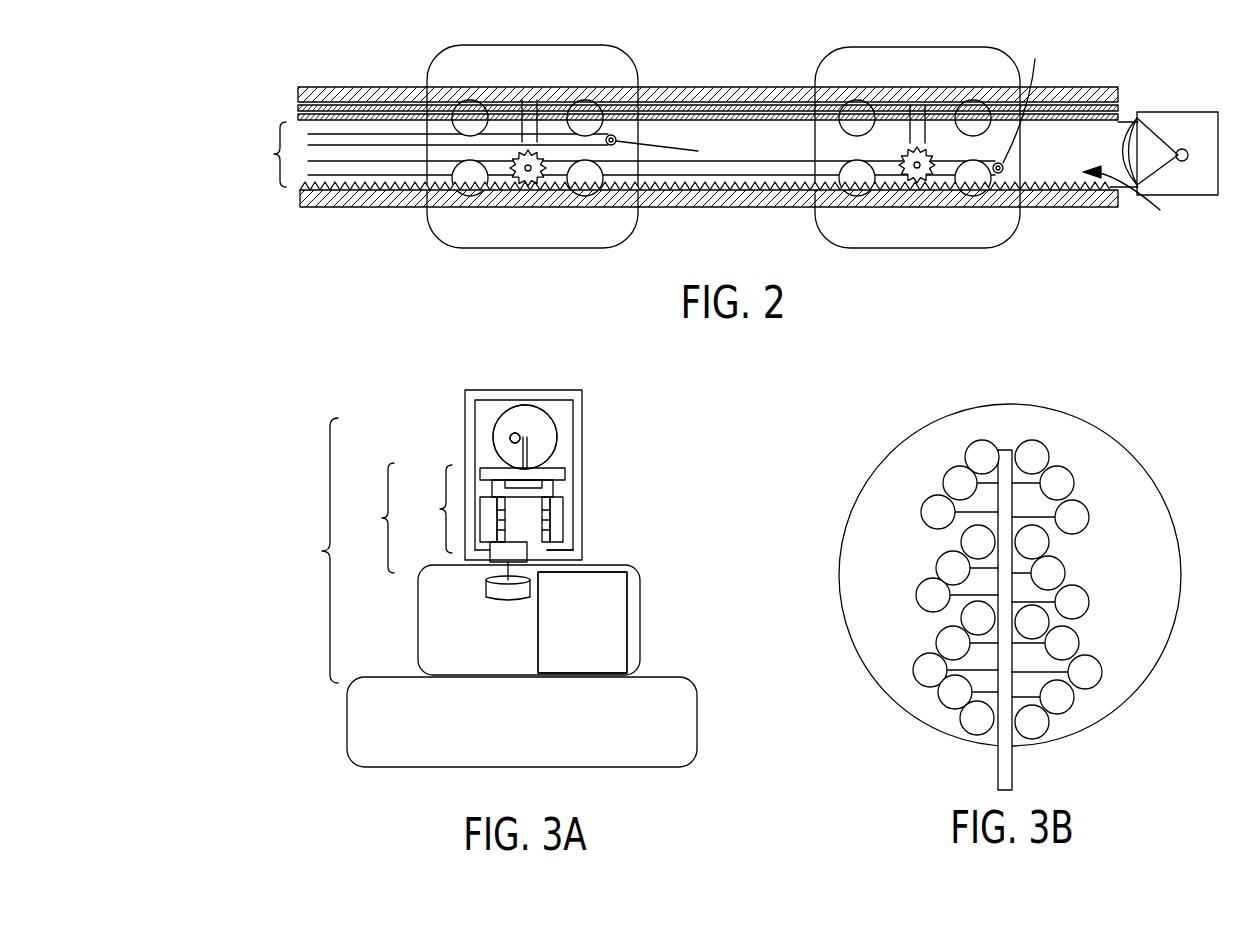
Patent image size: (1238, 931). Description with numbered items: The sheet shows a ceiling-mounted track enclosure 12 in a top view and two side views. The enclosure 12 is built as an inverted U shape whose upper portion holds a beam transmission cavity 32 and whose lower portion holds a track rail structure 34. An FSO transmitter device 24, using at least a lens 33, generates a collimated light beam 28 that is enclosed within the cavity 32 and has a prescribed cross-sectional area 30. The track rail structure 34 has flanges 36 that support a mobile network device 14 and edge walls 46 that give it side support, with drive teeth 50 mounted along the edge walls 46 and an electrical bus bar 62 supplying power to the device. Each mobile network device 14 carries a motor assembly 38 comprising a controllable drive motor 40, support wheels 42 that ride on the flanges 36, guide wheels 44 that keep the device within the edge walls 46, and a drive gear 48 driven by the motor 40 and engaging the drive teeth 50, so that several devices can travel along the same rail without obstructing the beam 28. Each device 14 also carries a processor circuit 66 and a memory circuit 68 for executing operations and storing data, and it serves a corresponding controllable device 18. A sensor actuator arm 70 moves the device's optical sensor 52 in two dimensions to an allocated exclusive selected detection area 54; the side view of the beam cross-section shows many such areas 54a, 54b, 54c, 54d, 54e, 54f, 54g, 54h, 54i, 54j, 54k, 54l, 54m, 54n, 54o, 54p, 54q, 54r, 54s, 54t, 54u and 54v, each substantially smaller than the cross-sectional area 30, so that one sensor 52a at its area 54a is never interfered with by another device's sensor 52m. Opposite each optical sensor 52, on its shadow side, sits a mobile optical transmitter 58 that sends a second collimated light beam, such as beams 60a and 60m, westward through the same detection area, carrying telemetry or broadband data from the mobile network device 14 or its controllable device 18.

In FIG. 2, the ceiling-mounted track enclosure 12 is at (372, 93).
In FIG. 3A, the ceiling-mounted track enclosure 12 is at (582, 425).
In FIG. 2, the mobile network device 14 is at (465, 55).
In FIG. 3A, the mobile network device 14 is at (314, 550).
In FIG. 3A, the controllable device 18 is at (437, 769).
In FIG. 2, the FSO transmitter device 24 is at (1196, 112).
In FIG. 2, the collimated light beam 28 is at (1133, 199).
In FIG. 3A, the collimated light beam 28 is at (512, 410).
In FIG. 3B, the collimated light beam 28 is at (1082, 417).
In FIG. 3A, the prescribed cross-sectional area 30 is at (545, 425).
In FIG. 3B, the prescribed cross-sectional area 30 is at (1020, 413).
In FIG. 2, the beam transmission cavity 32 is at (265, 154).
In FIG. 3A, the beam transmission cavity 32 is at (580, 398).
In FIG. 2, the lens 33 is at (1113, 148).
In FIG. 3A, the track rail structure 34 is at (433, 509).
In FIG. 3A, the flanges 36 is at (478, 548).
In FIG. 3A, the motor assembly 38 is at (373, 518).
In FIG. 3A, the controllable drive motor 40 is at (495, 595).
In FIG. 3A, the support wheels 42 is at (563, 505).
In FIG. 2, the guide wheels 44 is at (472, 115).
In FIG. 3A, the guide wheels 44 is at (480, 473).
In FIG. 3A, the edge walls 46 is at (472, 440).
In FIG. 2, the drive gear 48 is at (527, 187).
In FIG. 3A, the drive gear 48 is at (510, 560).
In FIG. 2, the drive teeth 50 is at (305, 193).
In FIG. 3A, the optical sensor 52 is at (510, 437).
In FIG. 3A, the exclusive selected detection area 54 is at (515, 438).
In FIG. 2, the optical sensor 52a is at (616, 139).
In FIG. 2, the optical sensor 52m is at (1004, 167).
In FIG. 3B, the exclusive selected detection area 54a is at (978, 458).
In FIG. 3B, the exclusive selected detection area 54b is at (963, 483).
In FIG. 3B, the exclusive selected detection area 54c is at (940, 511).
In FIG. 3B, the exclusive selected detection area 54d is at (975, 543).
In FIG. 3B, the exclusive selected detection area 54e is at (950, 570).
In FIG. 3B, the exclusive selected detection area 54f is at (930, 598).
In FIG. 3B, the exclusive selected detection area 54g is at (975, 620).
In FIG. 3B, the exclusive selected detection area 54h is at (950, 647).
In FIG. 3B, the exclusive selected detection area 54i is at (928, 672).
In FIG. 3B, the exclusive selected detection area 54j is at (952, 695).
In FIG. 3B, the exclusive selected detection area 54k is at (975, 722).
In FIG. 3B, the exclusive selected detection area 54l is at (1035, 458).
In FIG. 3B, the exclusive selected detection area 54m is at (1060, 486).
In FIG. 3B, the exclusive selected detection area 54n is at (1075, 518).
In FIG. 3B, the exclusive selected detection area 54o is at (1035, 545).
In FIG. 3B, the exclusive selected detection area 54p is at (1050, 575).
In FIG. 3B, the exclusive selected detection area 54q is at (1075, 605).
In FIG. 3B, the exclusive selected detection area 54r is at (1035, 625).
In FIG. 3B, the exclusive selected detection area 54s is at (1065, 647).
In FIG. 3B, the exclusive selected detection area 54t is at (1088, 675).
In FIG. 3B, the exclusive selected detection area 54u is at (1060, 700).
In FIG. 3B, the exclusive selected detection area 54v is at (1035, 725).
In FIG. 2, the mobile optical transmitter 58 is at (830, 99).
In FIG. 2, the mobile device-initiated collimated light beam 60a is at (312, 140).
In FIG. 2, the mobile device-initiated collimated light beam 60m is at (312, 168).
In FIG. 2, the electrical bus bar 62 is at (322, 115).
In FIG. 3A, the electrical bus bar 62 is at (577, 550).
In FIG. 3A, the processor circuit 66 is at (627, 598).
In FIG. 3A, the memory circuit 68 is at (582, 622).
In FIG. 3A, the sensor actuator arm 70 is at (527, 432).